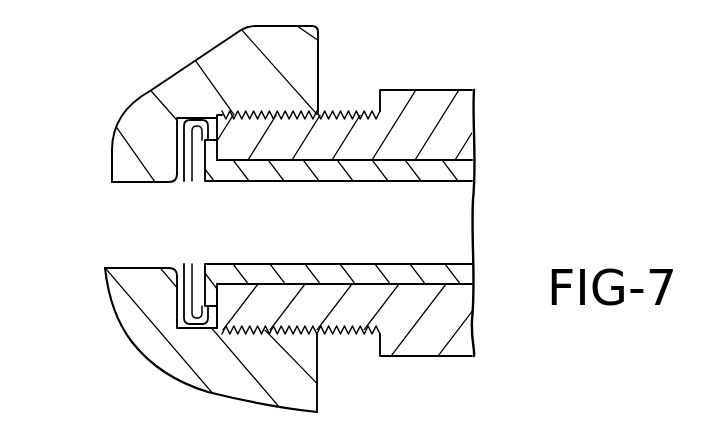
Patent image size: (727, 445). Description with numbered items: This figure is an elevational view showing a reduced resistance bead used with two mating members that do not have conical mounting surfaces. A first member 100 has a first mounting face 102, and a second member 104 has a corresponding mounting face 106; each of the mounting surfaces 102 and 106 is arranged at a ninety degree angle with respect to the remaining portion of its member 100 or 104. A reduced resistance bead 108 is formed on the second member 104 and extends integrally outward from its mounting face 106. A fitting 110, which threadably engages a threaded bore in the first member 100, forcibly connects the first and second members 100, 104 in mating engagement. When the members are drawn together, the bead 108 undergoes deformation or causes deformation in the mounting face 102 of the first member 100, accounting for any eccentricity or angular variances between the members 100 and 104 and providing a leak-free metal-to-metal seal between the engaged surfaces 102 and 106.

The first member 100 is at (182, 85).
The first mounting face 102 is at (180, 184).
The second member 104 is at (466, 174).
The mounting face 106 is at (184, 284).
The reduced resistance bead 108 is at (184, 147).
The fitting 110 is at (468, 121).